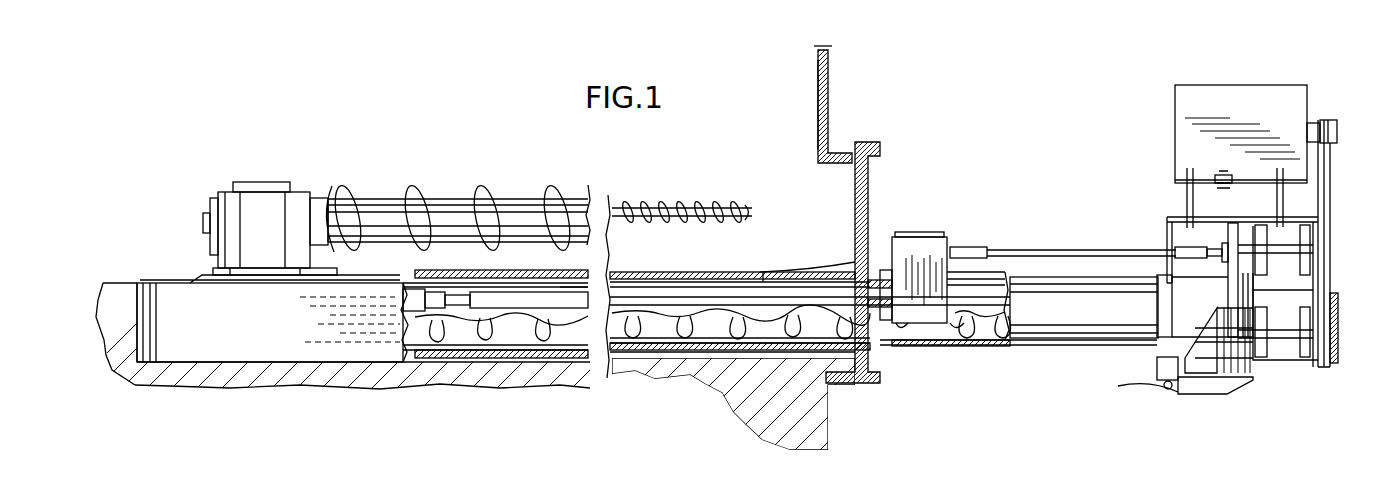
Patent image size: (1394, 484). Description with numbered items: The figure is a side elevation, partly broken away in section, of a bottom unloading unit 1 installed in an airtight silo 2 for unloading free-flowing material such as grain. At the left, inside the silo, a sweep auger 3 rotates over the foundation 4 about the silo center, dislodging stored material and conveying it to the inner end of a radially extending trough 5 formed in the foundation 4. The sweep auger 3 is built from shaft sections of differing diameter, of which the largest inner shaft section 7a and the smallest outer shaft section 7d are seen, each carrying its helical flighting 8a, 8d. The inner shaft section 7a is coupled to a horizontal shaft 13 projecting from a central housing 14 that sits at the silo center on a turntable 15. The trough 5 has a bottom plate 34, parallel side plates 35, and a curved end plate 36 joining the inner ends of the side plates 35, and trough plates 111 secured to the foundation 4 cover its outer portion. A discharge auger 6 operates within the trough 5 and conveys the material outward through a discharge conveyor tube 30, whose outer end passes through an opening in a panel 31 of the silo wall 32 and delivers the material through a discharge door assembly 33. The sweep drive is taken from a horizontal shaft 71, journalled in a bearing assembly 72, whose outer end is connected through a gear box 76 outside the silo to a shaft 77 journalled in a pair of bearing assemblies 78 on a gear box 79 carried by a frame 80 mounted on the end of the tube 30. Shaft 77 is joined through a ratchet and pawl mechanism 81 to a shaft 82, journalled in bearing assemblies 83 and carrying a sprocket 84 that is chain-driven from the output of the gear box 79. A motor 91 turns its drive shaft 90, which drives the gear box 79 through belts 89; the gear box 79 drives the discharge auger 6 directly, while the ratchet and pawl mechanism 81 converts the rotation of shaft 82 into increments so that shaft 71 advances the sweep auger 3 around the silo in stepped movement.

The bottom unloading unit 1 is at (1030, 194).
The silo 2 is at (838, 101).
The sweep auger 3 is at (459, 188).
The foundation 4 is at (104, 283).
The trough 5 is at (262, 360).
The discharge auger 6 is at (428, 355).
The inner shaft section 7a is at (380, 205).
The outer shaft section 7d is at (622, 212).
The helical flight 8a is at (424, 192).
The helical flight 8d is at (664, 205).
The horizontal shaft 13 is at (328, 192).
The central housing 14 is at (224, 195).
The turntable 15 is at (157, 283).
The discharge conveyor tube 30 is at (1072, 338).
The panel 31 is at (880, 152).
The silo wall 32 is at (818, 98).
The discharge door assembly 33 is at (1245, 393).
The bottom plate 34 is at (562, 368).
The side plates 35 is at (325, 340).
The curved end plate 36 is at (140, 362).
The horizontal shaft 71 is at (528, 292).
The bearing assembly 72 is at (420, 292).
The gear box 76 is at (922, 240).
The shaft 77 is at (1070, 250).
The bearing assemblies 78 is at (1305, 251).
The gear box 79 is at (1294, 352).
The frame 80 is at (1167, 217).
The ratchet and pawl mechanism 81 is at (1216, 296).
The shaft 82 is at (1280, 338).
The bearing assemblies 83 is at (1306, 318).
The sprocket 84 is at (1334, 363).
The belts 89 is at (1331, 197).
The drive shaft 90 is at (1313, 120).
The motor 91 is at (1241, 156).
The trough plates 111 is at (574, 272).